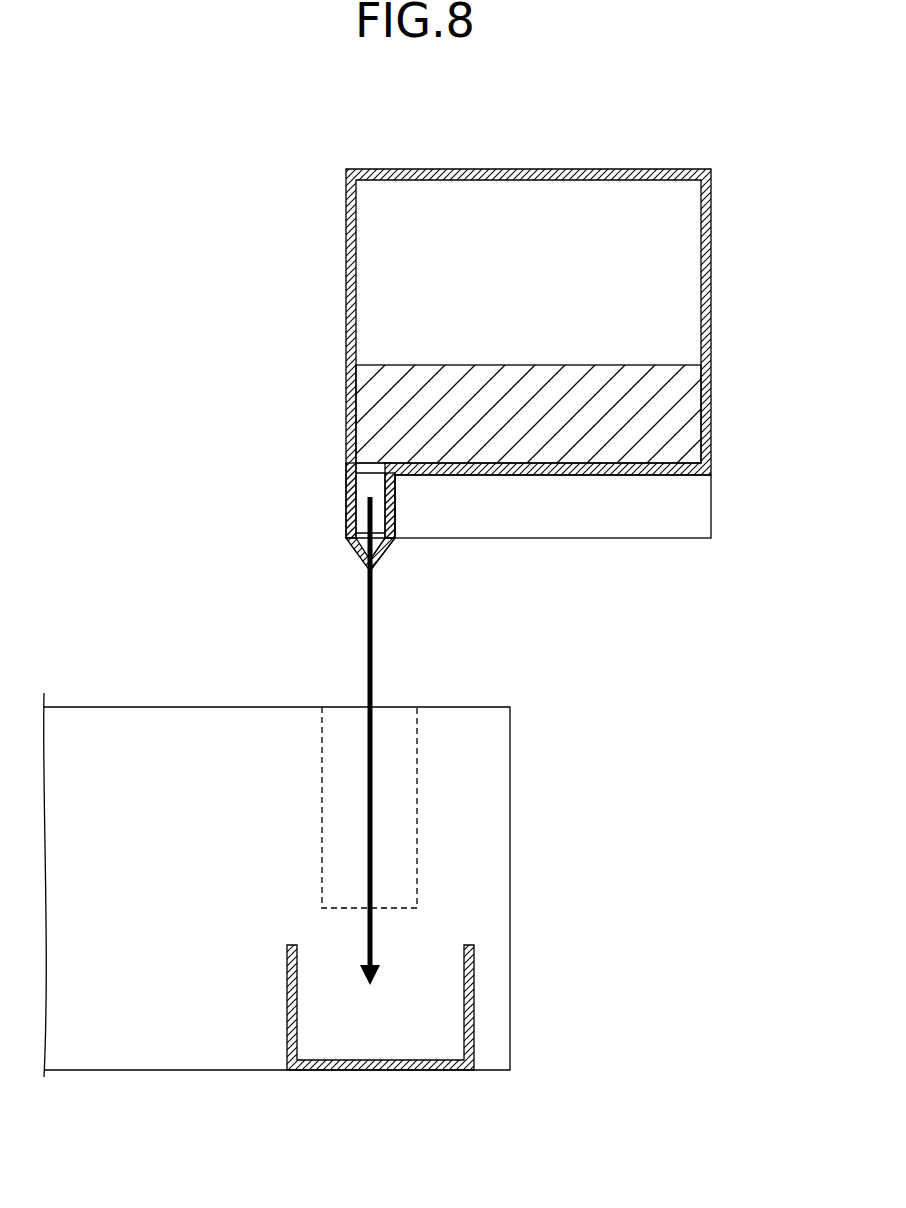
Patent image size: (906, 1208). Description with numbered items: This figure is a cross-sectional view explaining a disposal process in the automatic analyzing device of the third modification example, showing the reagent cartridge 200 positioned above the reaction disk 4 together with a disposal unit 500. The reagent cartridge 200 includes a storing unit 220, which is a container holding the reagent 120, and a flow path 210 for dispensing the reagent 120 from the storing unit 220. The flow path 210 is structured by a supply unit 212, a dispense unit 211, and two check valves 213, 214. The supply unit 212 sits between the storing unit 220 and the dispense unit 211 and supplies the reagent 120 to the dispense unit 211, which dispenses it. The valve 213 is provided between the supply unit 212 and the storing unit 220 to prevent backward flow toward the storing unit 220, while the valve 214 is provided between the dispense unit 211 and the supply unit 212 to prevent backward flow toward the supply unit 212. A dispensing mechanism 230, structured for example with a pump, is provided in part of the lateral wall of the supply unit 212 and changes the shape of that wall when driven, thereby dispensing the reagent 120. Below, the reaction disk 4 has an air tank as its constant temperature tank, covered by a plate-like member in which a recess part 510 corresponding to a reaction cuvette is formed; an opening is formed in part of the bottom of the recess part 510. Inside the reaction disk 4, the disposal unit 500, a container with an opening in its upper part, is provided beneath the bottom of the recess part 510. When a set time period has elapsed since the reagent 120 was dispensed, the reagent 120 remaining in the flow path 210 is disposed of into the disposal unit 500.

The reagent cartridge 200 is at (462, 365).
The storing unit 220 is at (346, 282).
The reagent 120 is at (676, 416).
The dispensing mechanism 230 is at (712, 505).
The flow path 210 is at (292, 538).
The dispense unit 211 is at (357, 556).
The supply unit 212 is at (346, 536).
The valve 213 is at (370, 470).
The valve 214 is at (386, 550).
The reaction disk 4 is at (208, 707).
The recess part 510 is at (417, 866).
The disposal unit 500 is at (475, 1005).